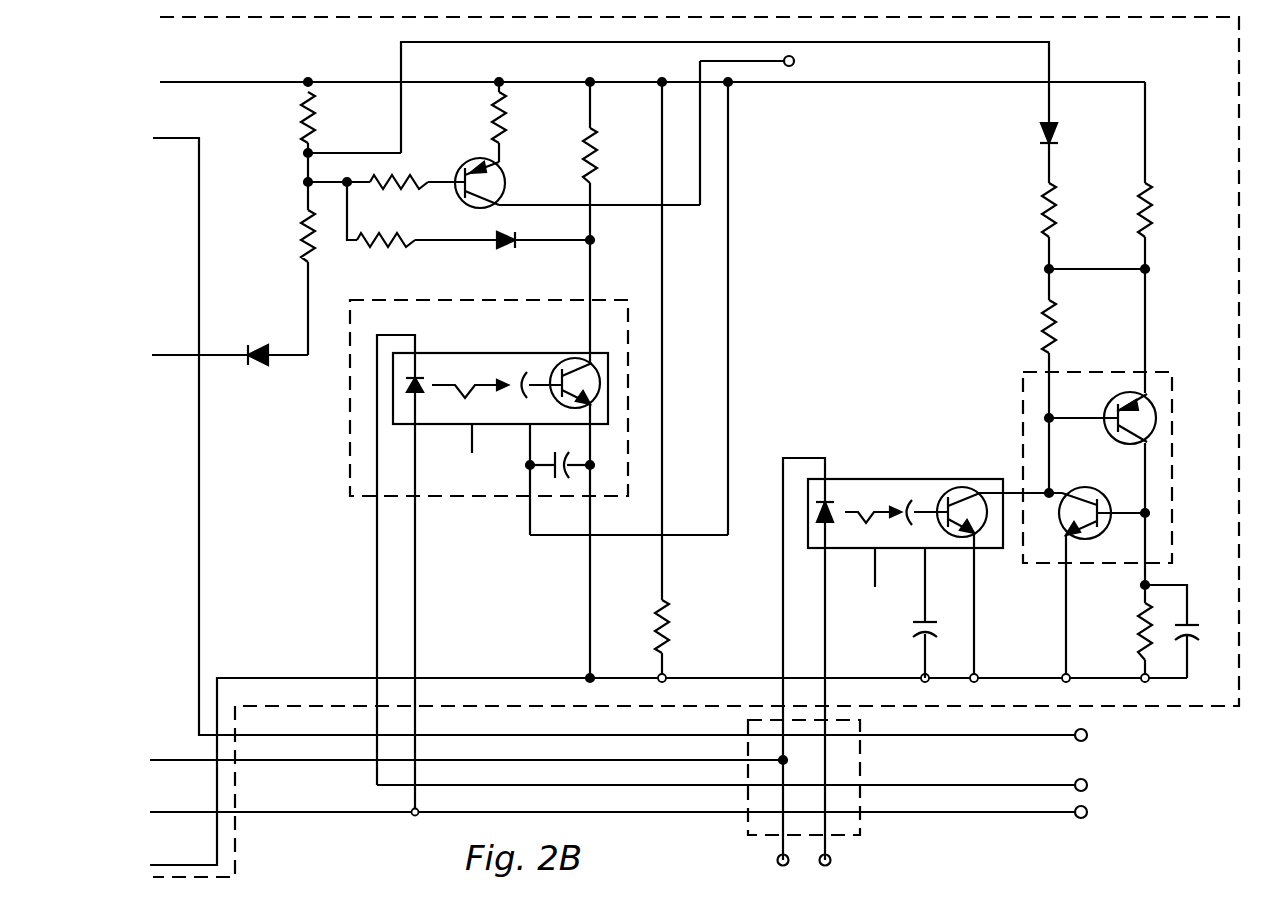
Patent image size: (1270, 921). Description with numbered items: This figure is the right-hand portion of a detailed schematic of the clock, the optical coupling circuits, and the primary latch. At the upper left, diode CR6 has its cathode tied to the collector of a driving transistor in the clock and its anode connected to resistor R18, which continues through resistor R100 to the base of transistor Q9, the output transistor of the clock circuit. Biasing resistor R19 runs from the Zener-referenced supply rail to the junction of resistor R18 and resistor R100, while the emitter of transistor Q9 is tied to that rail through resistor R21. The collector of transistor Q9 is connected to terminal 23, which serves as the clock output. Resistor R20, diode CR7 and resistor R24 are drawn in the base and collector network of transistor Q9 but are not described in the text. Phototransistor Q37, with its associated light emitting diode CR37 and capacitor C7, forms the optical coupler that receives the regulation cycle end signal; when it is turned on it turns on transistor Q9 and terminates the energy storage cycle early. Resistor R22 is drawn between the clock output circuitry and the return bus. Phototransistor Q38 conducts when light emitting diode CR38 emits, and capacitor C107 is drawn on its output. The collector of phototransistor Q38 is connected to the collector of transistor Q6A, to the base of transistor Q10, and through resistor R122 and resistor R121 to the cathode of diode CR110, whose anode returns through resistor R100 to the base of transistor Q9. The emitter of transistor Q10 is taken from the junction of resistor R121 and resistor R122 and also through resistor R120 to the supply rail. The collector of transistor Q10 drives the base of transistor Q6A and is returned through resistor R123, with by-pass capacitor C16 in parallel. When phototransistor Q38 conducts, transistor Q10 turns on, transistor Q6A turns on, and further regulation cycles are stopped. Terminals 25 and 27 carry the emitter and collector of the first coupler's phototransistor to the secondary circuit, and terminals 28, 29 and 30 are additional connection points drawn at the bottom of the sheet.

The terminal 23 is at (762, 61).
The terminal 25 is at (780, 868).
The terminal 27 is at (1087, 738).
The terminal 28 is at (1087, 786).
The terminal 29 is at (1086, 817).
The terminal 30 is at (829, 866).
The biasing resistor R19 is at (285, 117).
The resistor R18 is at (285, 236).
The resistor R21 is at (518, 117).
The resistor R24 is at (613, 155).
The resistor R100 is at (399, 196).
The resistor R20 is at (386, 254).
The resistor R22 is at (683, 626).
The resistor R121 is at (1019, 210).
The resistor R120 is at (1171, 210).
The resistor R122 is at (1019, 326).
The resistor R123 is at (1115, 631).
The diode CR6 is at (230, 368).
The diode CR7 is at (500, 254).
The diode CR110 is at (1013, 132).
The light emitting diode CR37 is at (442, 375).
The light emitting diode CR38 is at (852, 502).
The transistor Q9 is at (495, 183).
The phototransistor Q37 is at (500, 374).
The phototransistor Q38 is at (905, 500).
The transistor Q10 is at (1109, 414).
The transistor Q6A is at (1093, 503).
The capacitor C7 is at (557, 452).
The capacitor C107 is at (896, 613).
The by-pass capacitor C16 is at (1201, 644).